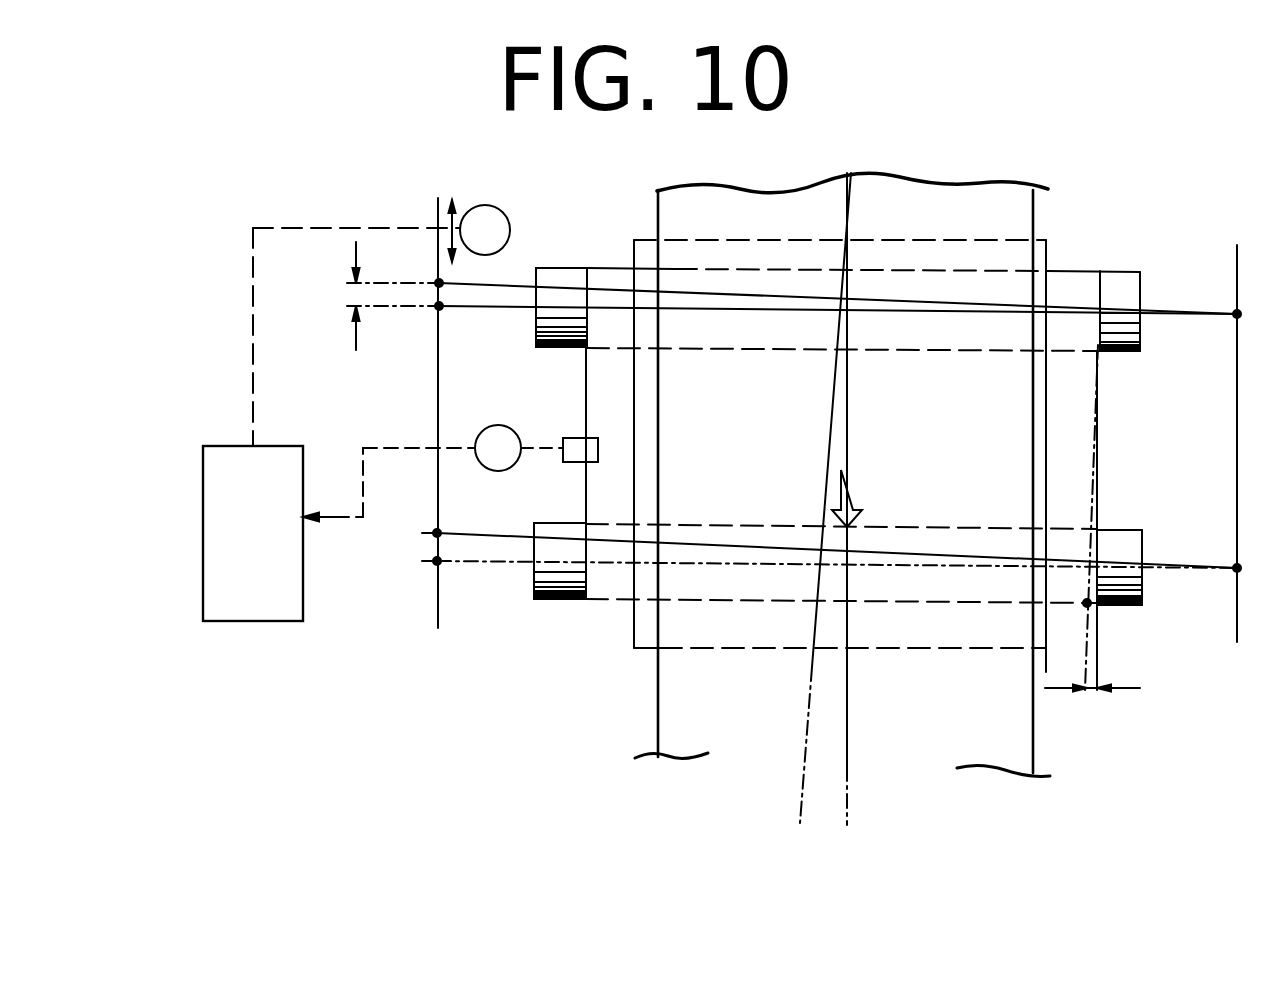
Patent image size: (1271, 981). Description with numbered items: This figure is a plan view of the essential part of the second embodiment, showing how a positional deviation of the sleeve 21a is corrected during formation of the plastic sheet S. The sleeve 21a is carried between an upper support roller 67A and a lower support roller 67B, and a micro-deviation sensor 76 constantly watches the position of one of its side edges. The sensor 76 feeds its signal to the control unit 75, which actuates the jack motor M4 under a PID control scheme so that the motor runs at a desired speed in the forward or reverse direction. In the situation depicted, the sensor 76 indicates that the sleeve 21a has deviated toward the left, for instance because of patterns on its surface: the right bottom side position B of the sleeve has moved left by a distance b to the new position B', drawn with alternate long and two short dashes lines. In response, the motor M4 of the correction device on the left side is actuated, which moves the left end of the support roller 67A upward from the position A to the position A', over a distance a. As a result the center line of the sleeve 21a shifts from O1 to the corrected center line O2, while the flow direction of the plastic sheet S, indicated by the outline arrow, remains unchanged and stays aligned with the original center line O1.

The jack motor M4 is at (482, 207).
The support roller 67A is at (560, 300).
The lower bearing block 67B is at (565, 583).
The sleeve 21a is at (621, 403).
The micro-deviation sensor 76 is at (574, 440).
The control unit 75 is at (203, 528).
The position A is at (792, 325).
The position A' is at (792, 277).
The distance a is at (339, 296).
The right bottom side position B is at (829, 520).
The position B' is at (829, 517).
The distance b is at (1090, 697).
The plastic sheet S is at (941, 728).
The center line O1 is at (847, 748).
The center line O2 is at (802, 754).